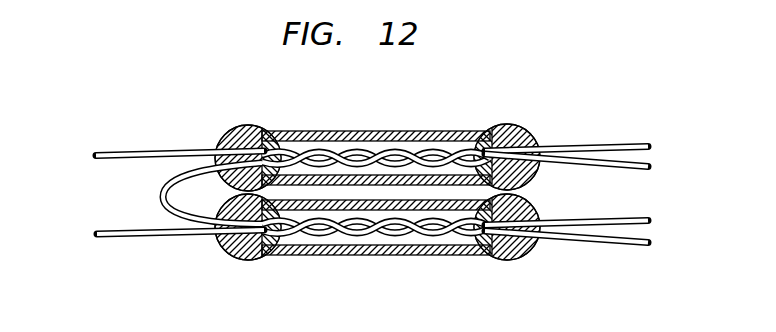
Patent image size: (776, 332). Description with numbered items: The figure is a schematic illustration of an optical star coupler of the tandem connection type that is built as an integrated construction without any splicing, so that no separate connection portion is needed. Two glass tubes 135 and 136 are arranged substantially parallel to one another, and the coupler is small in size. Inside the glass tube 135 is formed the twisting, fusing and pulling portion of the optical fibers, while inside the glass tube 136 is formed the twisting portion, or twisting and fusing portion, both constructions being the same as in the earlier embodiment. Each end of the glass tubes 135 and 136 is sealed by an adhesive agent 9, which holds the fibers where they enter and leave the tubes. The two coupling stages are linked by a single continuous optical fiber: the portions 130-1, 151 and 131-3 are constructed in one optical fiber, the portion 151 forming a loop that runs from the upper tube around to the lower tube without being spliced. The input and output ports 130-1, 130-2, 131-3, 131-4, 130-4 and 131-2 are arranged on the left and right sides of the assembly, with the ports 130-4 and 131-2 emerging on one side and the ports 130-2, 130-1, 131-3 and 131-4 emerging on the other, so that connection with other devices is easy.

The adhesive agent 9 is at (243, 128).
The glass tube 135 is at (381, 130).
The glass tube 136 is at (371, 257).
The input and output port 130-1 is at (635, 168).
The input and output port 130-2 is at (607, 145).
The input and output port 130-4 is at (127, 150).
The input and output port 131-2 is at (122, 238).
The input and output port 131-3 is at (628, 218).
The input and output port 131-4 is at (630, 246).
The connecting fiber portion 151 is at (163, 193).